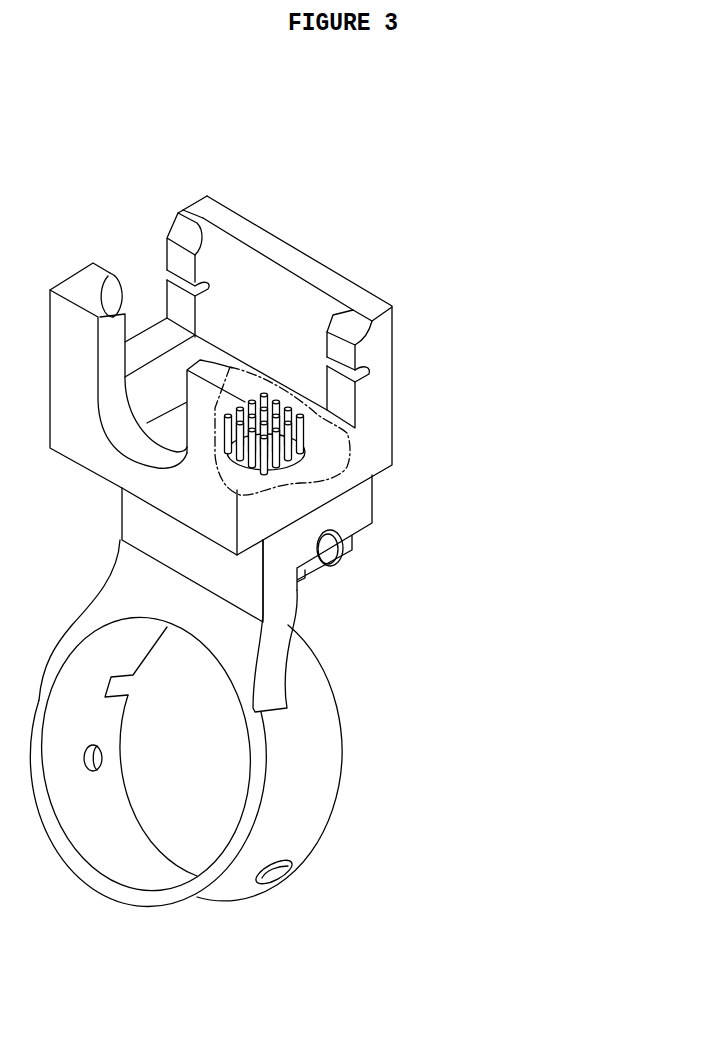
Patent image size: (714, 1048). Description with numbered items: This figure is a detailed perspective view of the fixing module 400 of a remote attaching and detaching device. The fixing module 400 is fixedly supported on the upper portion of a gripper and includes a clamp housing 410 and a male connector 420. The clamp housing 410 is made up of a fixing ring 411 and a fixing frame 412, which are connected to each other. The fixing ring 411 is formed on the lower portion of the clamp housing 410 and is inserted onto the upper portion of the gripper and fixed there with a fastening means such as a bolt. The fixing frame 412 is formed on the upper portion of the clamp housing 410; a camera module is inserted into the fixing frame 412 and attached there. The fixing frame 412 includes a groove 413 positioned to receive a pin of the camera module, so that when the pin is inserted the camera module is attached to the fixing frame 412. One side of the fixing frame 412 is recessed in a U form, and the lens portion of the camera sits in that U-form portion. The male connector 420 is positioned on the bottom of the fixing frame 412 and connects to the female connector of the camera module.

The fixing module 400 is at (270, 135).
The clamp housing 410 is at (520, 382).
The fixing ring 411 is at (315, 708).
The fixing frame 412 is at (377, 438).
The groove 413 is at (368, 371).
The male connector 420 is at (257, 393).